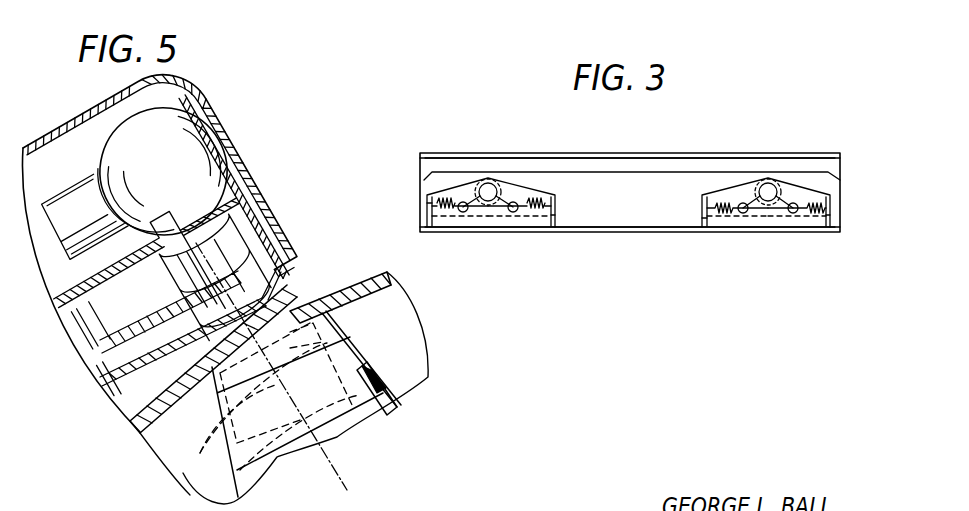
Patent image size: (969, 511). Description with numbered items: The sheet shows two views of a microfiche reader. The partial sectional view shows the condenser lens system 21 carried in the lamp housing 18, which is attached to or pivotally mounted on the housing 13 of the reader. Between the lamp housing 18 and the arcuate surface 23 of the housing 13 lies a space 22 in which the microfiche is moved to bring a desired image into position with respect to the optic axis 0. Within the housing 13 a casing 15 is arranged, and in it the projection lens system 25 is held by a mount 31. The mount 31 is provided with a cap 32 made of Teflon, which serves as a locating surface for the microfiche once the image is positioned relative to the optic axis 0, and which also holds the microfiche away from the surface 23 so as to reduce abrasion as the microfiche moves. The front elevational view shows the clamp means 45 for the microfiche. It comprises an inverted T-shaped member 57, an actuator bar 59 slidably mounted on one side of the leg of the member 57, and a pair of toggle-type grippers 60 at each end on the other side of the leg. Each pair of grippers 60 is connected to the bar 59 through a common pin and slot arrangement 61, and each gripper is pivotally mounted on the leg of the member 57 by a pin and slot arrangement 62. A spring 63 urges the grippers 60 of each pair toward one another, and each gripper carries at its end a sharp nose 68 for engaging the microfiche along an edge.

In FIG. 5, the lamp housing 18 is at (218, 110).
In FIG. 5, the condenser lens system 21 is at (273, 237).
In FIG. 5, the space 22 is at (137, 404).
In FIG. 5, the arcuate surface 23 is at (343, 292).
In FIG. 5, the housing 13 is at (153, 432).
In FIG. 5, the mount 31 is at (337, 337).
In FIG. 5, the casing 15 is at (385, 385).
In FIG. 5, the projection lens system 25 is at (197, 463).
In FIG. 5, the optic axis 0 is at (340, 472).
In FIG. 5, the cap 32 is at (290, 313).
In FIG. 3, the clamp means 45 is at (607, 152).
In FIG. 3, the actuator bar 59 is at (552, 155).
In FIG. 3, the inverted T-shaped member 57 is at (640, 227).
In FIG. 3, the toggle-type grippers 60 is at (510, 188).
In FIG. 3, the pin and slot arrangement 61 is at (485, 202).
In FIG. 3, the pin and slot arrangement 62 is at (513, 212).
In FIG. 3, the spring 63 is at (447, 210).
In FIG. 3, the sharp nose 68 is at (427, 226).